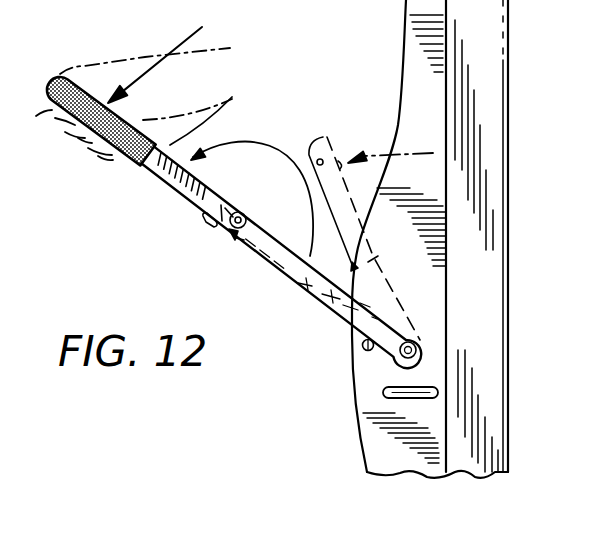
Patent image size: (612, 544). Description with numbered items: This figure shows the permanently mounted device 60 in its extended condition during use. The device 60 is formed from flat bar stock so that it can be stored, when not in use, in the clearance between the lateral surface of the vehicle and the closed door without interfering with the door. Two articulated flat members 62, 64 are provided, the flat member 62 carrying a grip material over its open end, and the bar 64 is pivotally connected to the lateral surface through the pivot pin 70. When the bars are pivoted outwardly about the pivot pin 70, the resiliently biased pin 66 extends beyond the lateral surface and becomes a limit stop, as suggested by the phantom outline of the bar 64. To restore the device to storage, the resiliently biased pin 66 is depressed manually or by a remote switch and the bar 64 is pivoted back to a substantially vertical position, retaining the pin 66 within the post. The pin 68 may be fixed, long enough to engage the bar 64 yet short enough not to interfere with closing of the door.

The device 60 is at (138, 172).
The articulated flat member 62 is at (182, 192).
The articulated flat member 64 is at (321, 283).
The resiliently biased pin 66 is at (420, 311).
The pin 68 is at (366, 352).
The pivot pin 70 is at (416, 351).